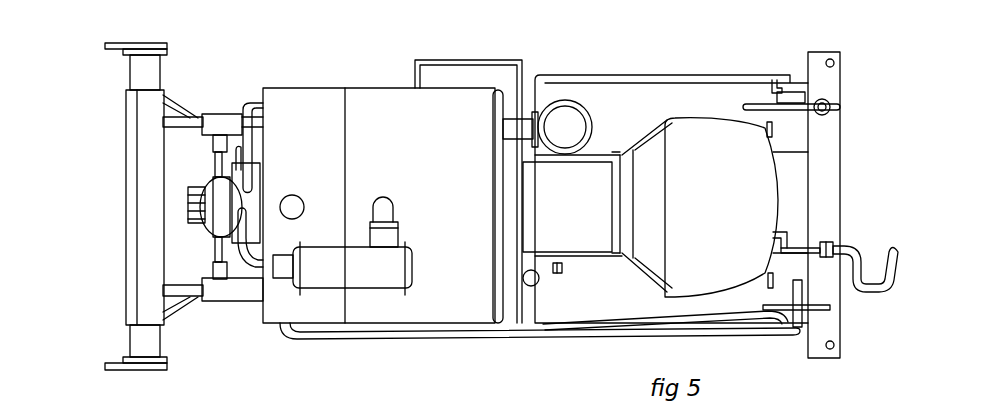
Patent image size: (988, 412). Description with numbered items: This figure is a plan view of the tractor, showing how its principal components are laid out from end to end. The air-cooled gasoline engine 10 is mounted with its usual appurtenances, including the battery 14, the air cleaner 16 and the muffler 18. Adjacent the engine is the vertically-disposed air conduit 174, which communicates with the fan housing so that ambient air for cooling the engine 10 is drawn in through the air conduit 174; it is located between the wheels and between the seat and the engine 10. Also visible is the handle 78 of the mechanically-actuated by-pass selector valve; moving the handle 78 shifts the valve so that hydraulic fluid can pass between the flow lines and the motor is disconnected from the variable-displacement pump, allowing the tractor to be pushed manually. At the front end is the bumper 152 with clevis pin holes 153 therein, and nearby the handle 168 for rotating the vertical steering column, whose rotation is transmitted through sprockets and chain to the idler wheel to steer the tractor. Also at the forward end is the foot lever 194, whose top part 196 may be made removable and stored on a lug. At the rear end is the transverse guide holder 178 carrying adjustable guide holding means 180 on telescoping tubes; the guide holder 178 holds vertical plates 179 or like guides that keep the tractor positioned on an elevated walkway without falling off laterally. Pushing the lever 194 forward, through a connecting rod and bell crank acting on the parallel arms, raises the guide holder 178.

The air-cooled gasoline engine 10 is at (380, 104).
The battery 14 is at (445, 75).
The air cleaner 16 is at (568, 118).
The muffler 18 is at (367, 280).
The handle 78 is at (538, 284).
The bumper 152 is at (823, 165).
The clevis pin holes 153 is at (833, 67).
The handle 168 is at (747, 104).
The air conduit 174 is at (583, 173).
The guide holder 178 is at (147, 103).
The vertical plates 179 is at (103, 47).
The guide holding means 180 is at (125, 52).
The foot lever 194 is at (877, 200).
The top part 196 is at (890, 294).